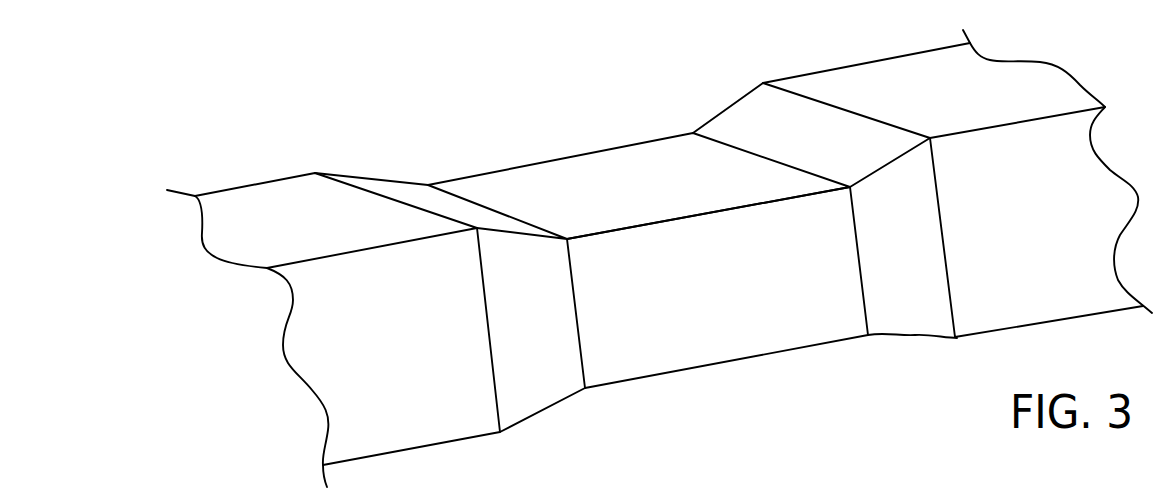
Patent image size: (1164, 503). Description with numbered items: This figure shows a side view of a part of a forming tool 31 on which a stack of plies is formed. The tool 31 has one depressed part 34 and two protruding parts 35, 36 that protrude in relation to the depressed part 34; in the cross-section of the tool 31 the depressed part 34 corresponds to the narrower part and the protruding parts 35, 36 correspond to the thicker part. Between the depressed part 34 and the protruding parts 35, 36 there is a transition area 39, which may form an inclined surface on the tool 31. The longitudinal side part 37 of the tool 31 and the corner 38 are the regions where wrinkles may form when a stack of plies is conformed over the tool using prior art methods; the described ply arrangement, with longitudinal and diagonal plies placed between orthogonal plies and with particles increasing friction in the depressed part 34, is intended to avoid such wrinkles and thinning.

The tool 31 is at (651, 258).
The depressed part 34 is at (676, 256).
The protruding part 35 is at (230, 178).
The protruding part 36 is at (838, 56).
The side part 37 is at (793, 235).
The corner 38 is at (645, 240).
The transition area 39 is at (747, 122).